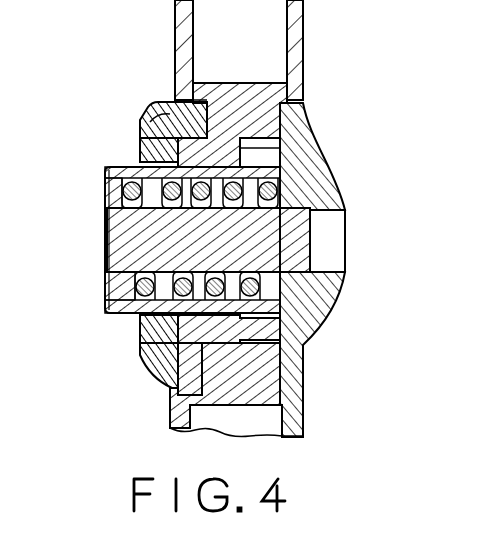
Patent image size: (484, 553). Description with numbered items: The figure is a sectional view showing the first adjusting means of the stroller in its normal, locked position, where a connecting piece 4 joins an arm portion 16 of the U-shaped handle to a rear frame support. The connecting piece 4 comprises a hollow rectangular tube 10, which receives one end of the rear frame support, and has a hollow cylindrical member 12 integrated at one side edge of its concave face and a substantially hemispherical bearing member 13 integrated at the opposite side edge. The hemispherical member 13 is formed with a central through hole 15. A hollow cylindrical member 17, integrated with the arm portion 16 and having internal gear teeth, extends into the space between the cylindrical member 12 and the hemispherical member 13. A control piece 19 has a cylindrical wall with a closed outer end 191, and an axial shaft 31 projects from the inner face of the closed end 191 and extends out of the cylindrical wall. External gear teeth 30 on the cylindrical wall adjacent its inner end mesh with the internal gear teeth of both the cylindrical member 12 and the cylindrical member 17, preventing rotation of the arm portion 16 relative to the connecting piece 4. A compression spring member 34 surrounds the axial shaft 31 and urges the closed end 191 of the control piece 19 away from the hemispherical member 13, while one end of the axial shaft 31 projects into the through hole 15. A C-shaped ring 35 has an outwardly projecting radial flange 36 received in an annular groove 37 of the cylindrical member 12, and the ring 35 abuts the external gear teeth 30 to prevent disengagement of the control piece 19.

The connecting piece 4 is at (428, 280).
The hollow rectangular tube 10 is at (304, 425).
The hollow cylindrical member 12 is at (158, 104).
The substantially hemispherical bearing member 13 is at (317, 180).
The central through hole 15 is at (330, 226).
The arm portion 16 is at (173, 51).
The hollow cylindrical member 17 is at (176, 384).
The control piece 19 is at (103, 307).
The external gear teeth 30 is at (280, 150).
The axial shaft 31 is at (310, 247).
The compression spring member 34 is at (308, 281).
The C-shaped ring 35 is at (140, 158).
The outwardly projecting radial flange 36 is at (146, 131).
The annular groove 37 is at (140, 348).
The closed outer end 191 is at (104, 238).